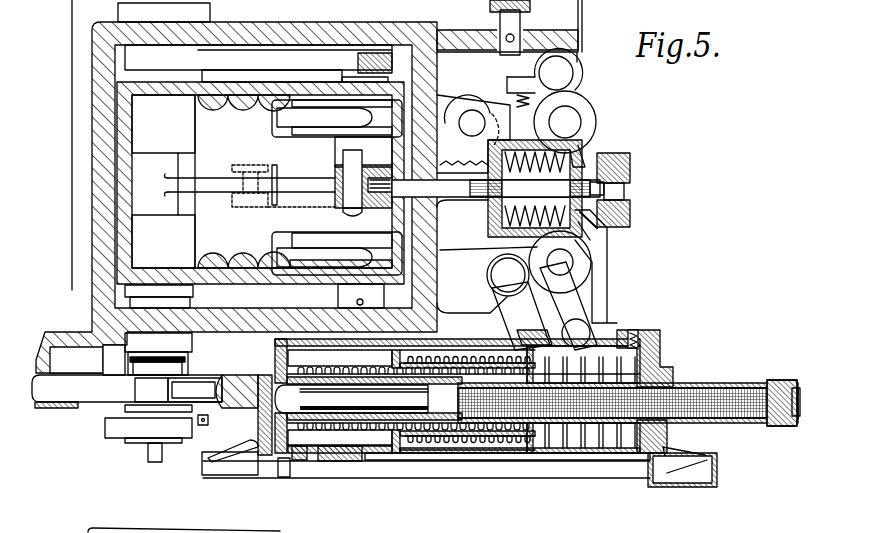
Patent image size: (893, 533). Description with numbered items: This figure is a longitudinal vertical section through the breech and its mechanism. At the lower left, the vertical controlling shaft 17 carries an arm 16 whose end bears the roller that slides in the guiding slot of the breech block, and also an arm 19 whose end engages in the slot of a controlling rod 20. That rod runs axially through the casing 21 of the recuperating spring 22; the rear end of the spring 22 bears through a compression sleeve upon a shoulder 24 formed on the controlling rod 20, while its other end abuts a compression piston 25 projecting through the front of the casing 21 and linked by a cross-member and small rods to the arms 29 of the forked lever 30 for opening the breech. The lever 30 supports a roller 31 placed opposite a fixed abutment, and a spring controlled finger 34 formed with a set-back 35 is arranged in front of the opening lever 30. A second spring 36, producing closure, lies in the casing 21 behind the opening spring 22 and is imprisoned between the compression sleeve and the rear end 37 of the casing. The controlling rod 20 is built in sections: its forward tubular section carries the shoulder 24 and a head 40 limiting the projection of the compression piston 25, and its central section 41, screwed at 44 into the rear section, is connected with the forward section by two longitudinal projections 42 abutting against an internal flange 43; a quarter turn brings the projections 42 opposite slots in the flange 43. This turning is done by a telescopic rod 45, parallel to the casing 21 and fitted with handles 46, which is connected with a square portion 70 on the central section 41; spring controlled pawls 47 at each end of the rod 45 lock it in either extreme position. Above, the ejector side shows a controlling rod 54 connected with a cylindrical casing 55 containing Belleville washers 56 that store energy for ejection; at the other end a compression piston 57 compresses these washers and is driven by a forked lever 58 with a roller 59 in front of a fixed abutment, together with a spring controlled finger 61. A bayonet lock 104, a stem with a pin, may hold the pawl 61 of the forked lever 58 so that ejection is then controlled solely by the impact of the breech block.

The bayonet lock 104 is at (512, 28).
The forked lever 58 is at (498, 123).
The roller 59 is at (588, 127).
The spring controlled finger 61 is at (587, 156).
The arm 16 is at (222, 182).
The controlling rod 54 is at (466, 190).
The compression piston 57 is at (510, 225).
The cylindrical casing 55 is at (573, 217).
The Belleville washers 56 is at (580, 225).
The roller 31 is at (580, 272).
The set-back 35 is at (585, 290).
The spring controlled finger 34 is at (597, 317).
The forked lever 30 is at (508, 308).
The arms 29 is at (522, 340).
The arm 19 is at (186, 380).
The rear end 37 is at (275, 358).
The internal flange 43 is at (320, 360).
The longitudinal projections 42 is at (350, 355).
The compression piston 25 is at (665, 352).
The head 40 is at (798, 366).
The vertical controlling shaft 17 is at (152, 365).
The spring controlled pawls 47 is at (690, 455).
The screwed connection 44 is at (232, 405).
The square portion 70 is at (265, 388).
The handles 46 is at (717, 475).
The central section 41 is at (283, 462).
The second spring 36 is at (325, 395).
The controlling rod 20 is at (365, 445).
The rod 45 is at (392, 478).
The casing 21 is at (435, 458).
The recuperating spring 22 is at (480, 446).
The shoulder 24 is at (510, 425).